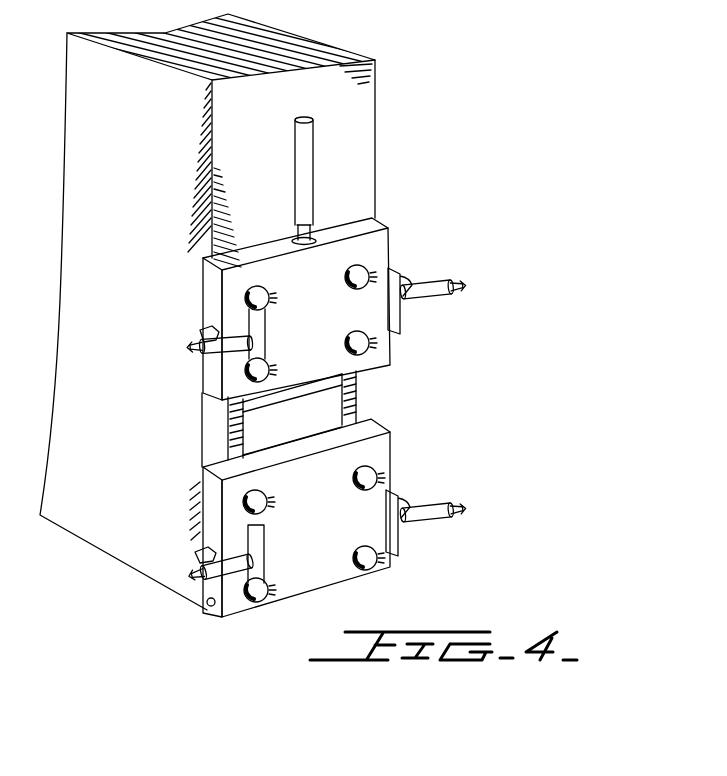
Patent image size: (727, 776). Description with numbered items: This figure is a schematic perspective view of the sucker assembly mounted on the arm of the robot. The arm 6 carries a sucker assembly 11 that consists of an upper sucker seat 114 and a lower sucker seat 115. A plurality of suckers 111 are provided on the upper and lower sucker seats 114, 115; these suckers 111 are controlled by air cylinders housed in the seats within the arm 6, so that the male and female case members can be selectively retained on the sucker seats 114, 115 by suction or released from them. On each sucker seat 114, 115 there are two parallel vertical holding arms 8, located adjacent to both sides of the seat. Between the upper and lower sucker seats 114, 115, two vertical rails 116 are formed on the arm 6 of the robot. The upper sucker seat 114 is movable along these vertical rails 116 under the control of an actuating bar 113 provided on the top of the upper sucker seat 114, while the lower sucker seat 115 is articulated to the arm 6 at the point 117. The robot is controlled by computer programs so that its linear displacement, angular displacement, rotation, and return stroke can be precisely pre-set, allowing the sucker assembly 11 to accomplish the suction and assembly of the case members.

The arm 6 is at (362, 152).
The holding arms 8 is at (213, 340).
The sucker assembly 11 is at (415, 394).
The suckers 111 is at (368, 270).
The actuating bar 113 is at (311, 193).
The upper sucker seat 114 is at (367, 302).
The lower sucker seat 115 is at (388, 492).
The vertical rails 116 is at (240, 440).
The articulation point 117 is at (212, 607).